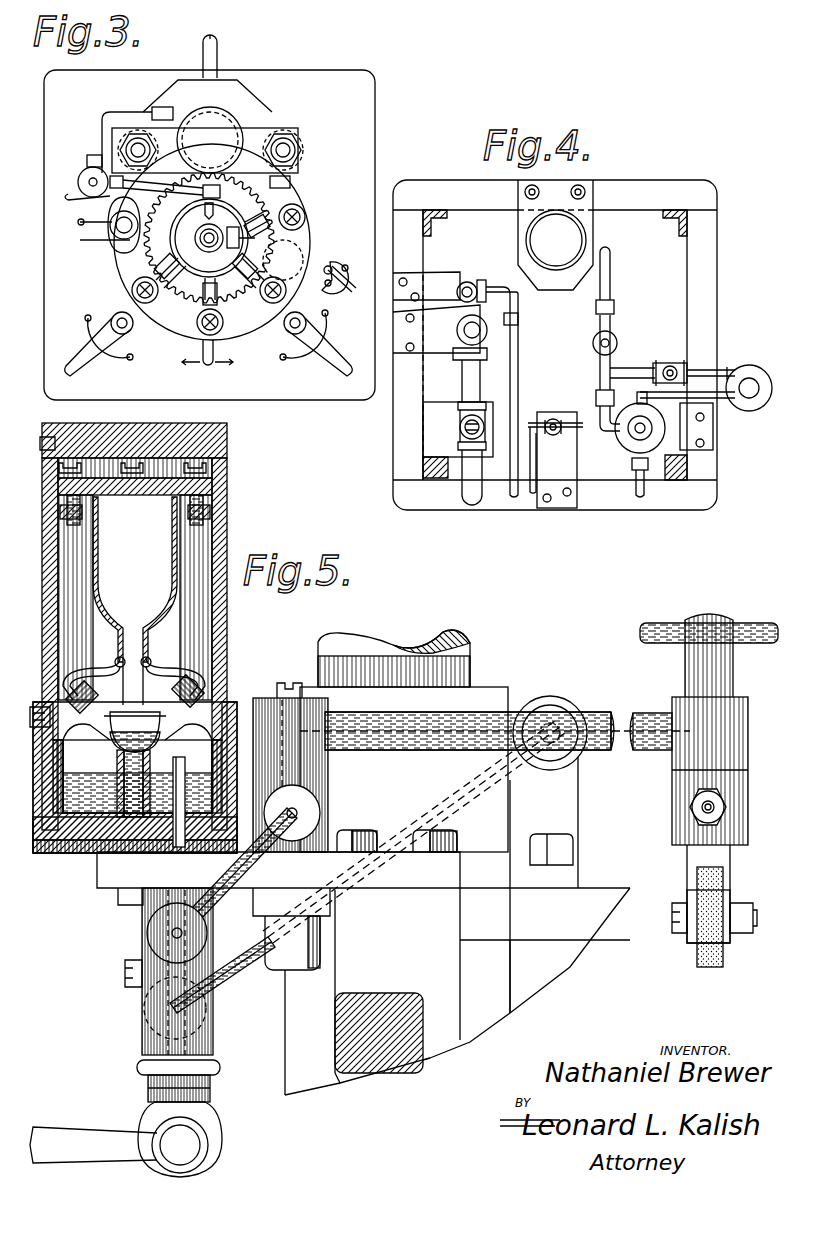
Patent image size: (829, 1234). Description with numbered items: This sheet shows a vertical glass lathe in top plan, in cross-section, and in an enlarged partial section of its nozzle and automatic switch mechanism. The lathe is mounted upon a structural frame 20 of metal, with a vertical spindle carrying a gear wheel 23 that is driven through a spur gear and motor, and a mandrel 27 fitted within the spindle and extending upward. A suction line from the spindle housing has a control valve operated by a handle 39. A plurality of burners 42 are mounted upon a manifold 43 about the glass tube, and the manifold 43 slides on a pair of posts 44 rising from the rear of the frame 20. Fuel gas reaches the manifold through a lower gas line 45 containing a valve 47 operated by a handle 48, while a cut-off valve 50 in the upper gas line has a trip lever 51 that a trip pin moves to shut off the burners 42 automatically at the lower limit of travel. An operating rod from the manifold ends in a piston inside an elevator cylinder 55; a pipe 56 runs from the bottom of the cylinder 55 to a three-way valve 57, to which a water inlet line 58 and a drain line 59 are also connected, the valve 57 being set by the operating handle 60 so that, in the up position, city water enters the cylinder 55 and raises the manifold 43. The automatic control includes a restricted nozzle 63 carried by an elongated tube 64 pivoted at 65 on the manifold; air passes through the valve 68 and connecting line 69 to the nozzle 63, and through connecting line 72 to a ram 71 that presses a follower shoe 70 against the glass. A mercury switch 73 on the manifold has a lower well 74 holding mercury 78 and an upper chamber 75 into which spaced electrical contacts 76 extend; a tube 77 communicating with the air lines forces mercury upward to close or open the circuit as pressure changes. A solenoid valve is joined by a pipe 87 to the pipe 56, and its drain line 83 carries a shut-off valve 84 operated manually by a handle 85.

In FIG. 4, the structural frame 20 is at (690, 235).
In FIG. 3, the gear wheel 23 is at (225, 290).
In FIG. 3, the mandrel 27 is at (213, 236).
In FIG. 3, the handle 39 is at (190, 372).
In FIG. 3, the burners 42 is at (185, 292).
In FIG. 3, the manifold 43 is at (300, 232).
In FIG. 5, the manifold 43 is at (560, 933).
In FIG. 3, the posts 44 is at (130, 150).
In FIG. 5, the posts 44 is at (470, 647).
In FIG. 4, the lower gas line 45 is at (472, 373).
In FIG. 4, the valve 47 is at (458, 432).
In FIG. 3, the handle 48 is at (80, 374).
In FIG. 3, the cut-off valve 50 is at (112, 253).
In FIG. 3, the trip lever 51 is at (90, 240).
In FIG. 3, the elevator cylinder 55 is at (217, 112).
In FIG. 4, the elevator cylinder 55 is at (570, 237).
In FIG. 4, the pipe 56 is at (608, 278).
In FIG. 4, the three-way valve 57 is at (656, 434).
In FIG. 4, the water inlet line 58 is at (638, 478).
In FIG. 4, the drain line 59 is at (728, 413).
In FIG. 3, the operating handle 60 is at (342, 376).
In FIG. 5, the restricted nozzle 63 is at (716, 810).
In FIG. 5, the elongated tube 64 is at (488, 725).
In FIG. 5, the pivot 65 is at (316, 758).
In FIG. 3, the valve 68 is at (75, 200).
In FIG. 5, the valve 68 is at (153, 1135).
In FIG. 5, the connecting line 69 is at (217, 894).
In FIG. 5, the follower shoe 70 is at (716, 958).
In FIG. 5, the ram 71 is at (567, 698).
In FIG. 5, the connecting line 72 is at (246, 965).
In FIG. 5, the mercury switch 73 is at (56, 570).
In FIG. 5, the lower well 74 is at (100, 784).
In FIG. 5, the upper chamber 75 is at (112, 722).
In FIG. 5, the electrical contacts 76 is at (135, 624).
In FIG. 5, the tube 77 is at (183, 795).
In FIG. 5, the mercury 78 is at (140, 736).
In FIG. 4, the drain line 83 is at (727, 368).
In FIG. 4, the shut-off valve 84 is at (670, 370).
In FIG. 3, the handle 85 is at (350, 263).
In FIG. 4, the pipe 87 is at (612, 326).